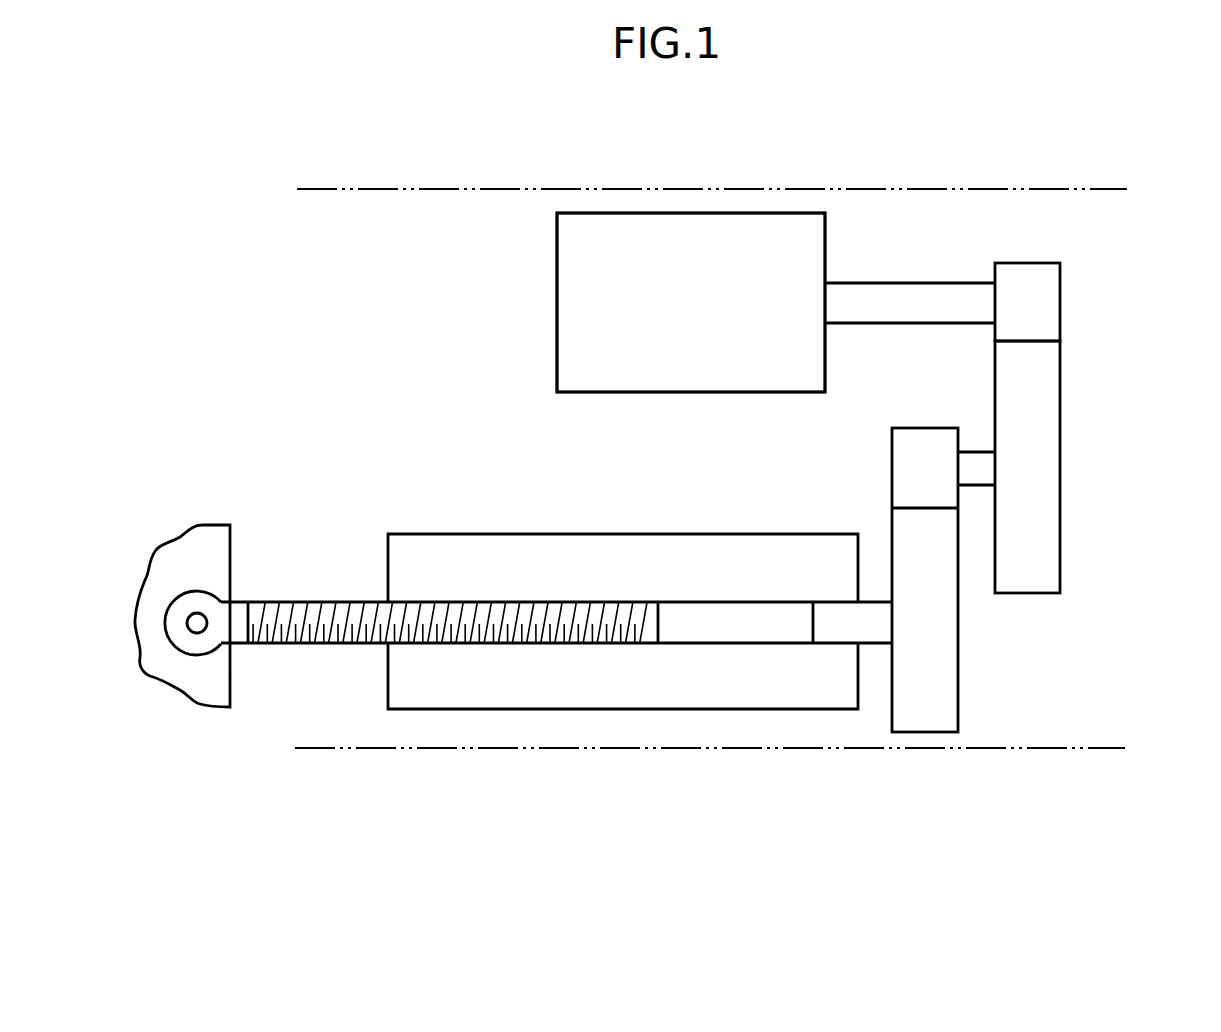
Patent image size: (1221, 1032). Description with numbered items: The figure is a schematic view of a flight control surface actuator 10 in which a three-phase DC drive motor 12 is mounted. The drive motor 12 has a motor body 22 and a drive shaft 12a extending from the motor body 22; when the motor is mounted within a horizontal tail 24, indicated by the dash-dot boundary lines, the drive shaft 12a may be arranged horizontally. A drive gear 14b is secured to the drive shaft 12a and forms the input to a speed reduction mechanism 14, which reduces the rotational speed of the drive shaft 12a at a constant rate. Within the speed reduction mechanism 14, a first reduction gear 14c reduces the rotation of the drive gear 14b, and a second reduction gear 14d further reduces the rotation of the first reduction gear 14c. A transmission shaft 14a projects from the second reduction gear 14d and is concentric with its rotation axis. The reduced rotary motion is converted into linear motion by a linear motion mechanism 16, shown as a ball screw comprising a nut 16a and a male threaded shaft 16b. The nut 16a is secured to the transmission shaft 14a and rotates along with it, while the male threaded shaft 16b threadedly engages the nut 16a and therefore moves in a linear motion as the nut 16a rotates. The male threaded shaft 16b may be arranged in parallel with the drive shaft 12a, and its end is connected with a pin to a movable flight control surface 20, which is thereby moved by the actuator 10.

The flight control surface actuator 10 is at (307, 338).
The drive motor 12 is at (537, 353).
The drive shaft 12a is at (908, 283).
The speed reduction mechanism 14 is at (1005, 521).
The transmission shaft 14a is at (833, 643).
The drive gear 14b is at (1060, 285).
The first reduction gear 14c is at (1060, 533).
The second reduction gear 14d is at (958, 680).
The linear motion mechanism 16 is at (539, 651).
The nut 16a is at (688, 534).
The male threaded shaft 16b is at (325, 643).
The movable flight control surface 20 is at (230, 671).
The motor body 22 is at (688, 213).
The horizontal tail 24 is at (432, 189).